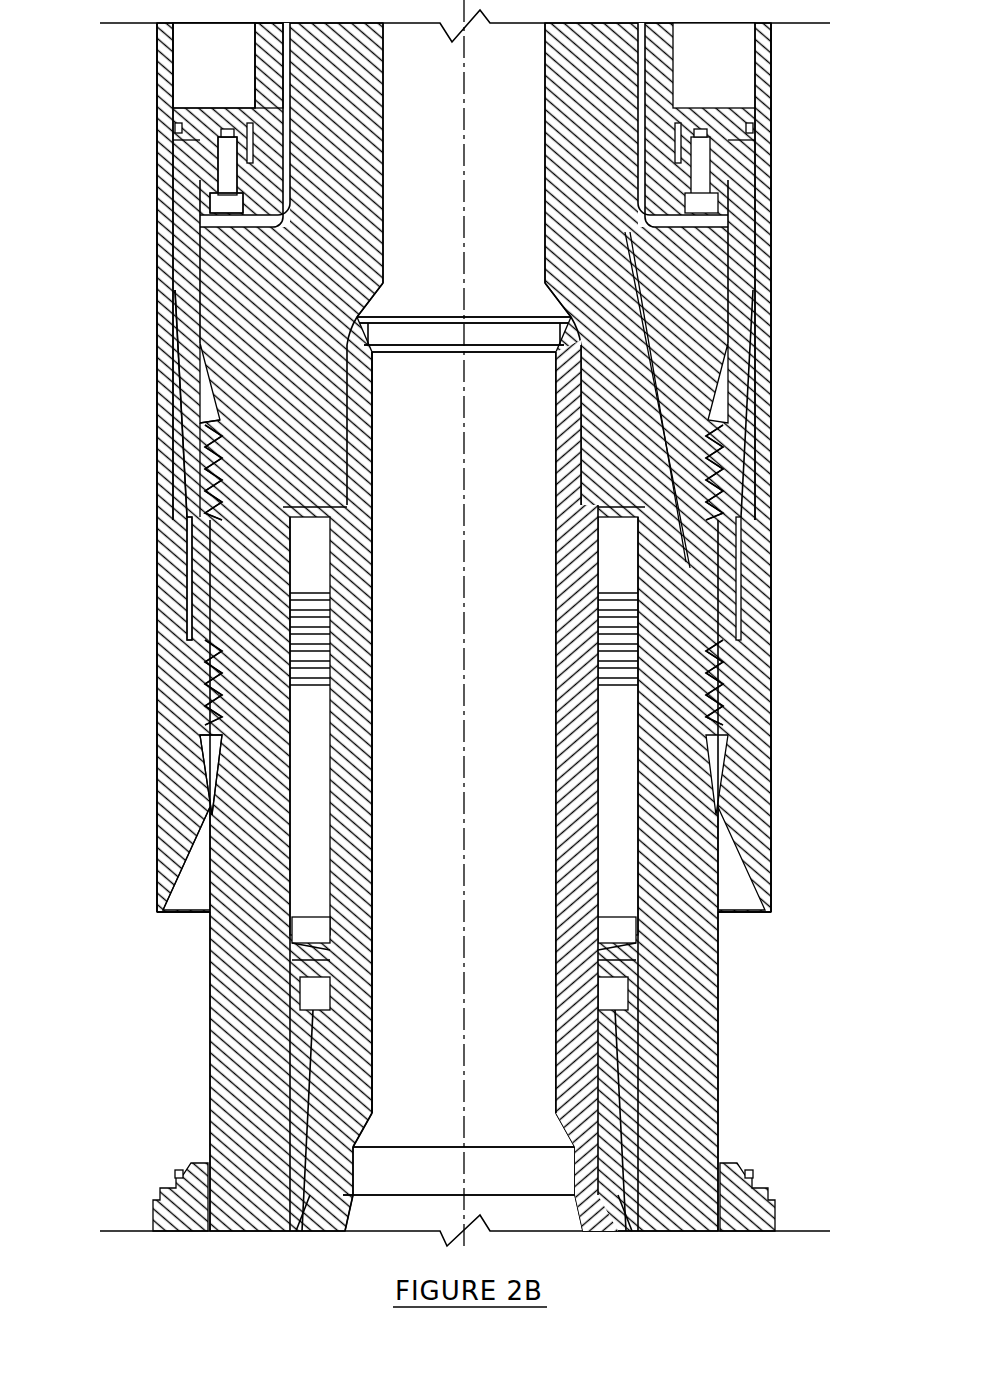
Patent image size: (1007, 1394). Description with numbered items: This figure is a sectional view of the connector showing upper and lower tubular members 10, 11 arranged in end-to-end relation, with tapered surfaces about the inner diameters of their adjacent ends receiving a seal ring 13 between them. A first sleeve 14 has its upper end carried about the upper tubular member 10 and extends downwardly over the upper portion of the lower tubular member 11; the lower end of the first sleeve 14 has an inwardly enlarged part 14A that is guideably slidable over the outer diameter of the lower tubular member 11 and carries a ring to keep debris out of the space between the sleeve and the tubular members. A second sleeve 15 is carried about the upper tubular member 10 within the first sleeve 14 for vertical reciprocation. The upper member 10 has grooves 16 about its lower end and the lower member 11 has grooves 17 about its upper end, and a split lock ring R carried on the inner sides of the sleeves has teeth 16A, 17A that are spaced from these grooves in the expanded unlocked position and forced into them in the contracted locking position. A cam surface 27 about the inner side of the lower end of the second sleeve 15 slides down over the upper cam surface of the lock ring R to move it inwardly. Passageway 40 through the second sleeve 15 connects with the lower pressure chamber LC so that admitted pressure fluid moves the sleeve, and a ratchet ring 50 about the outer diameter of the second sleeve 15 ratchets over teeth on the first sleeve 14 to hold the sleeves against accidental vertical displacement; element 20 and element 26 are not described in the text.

The upper tubular member 10 is at (253, 330).
The lower tubular member 11 is at (722, 948).
The seal ring 13 is at (758, 390).
The first sleeve 14 is at (772, 57).
The inwardly enlarged part 14A is at (207, 810).
The second sleeve 15 is at (180, 332).
The grooves 16 is at (213, 477).
The teeth 16A is at (213, 497).
The grooves 17 is at (717, 697).
The teeth 17A is at (212, 707).
The gap 20 is at (215, 678).
The body upper portion 26 is at (757, 353).
The cam surface 27 is at (760, 492).
The passageway 40 is at (257, 82).
The ratchet ring 50 is at (172, 220).
The lower pressure chamber LC is at (197, 87).
The split lock ring R is at (740, 552).